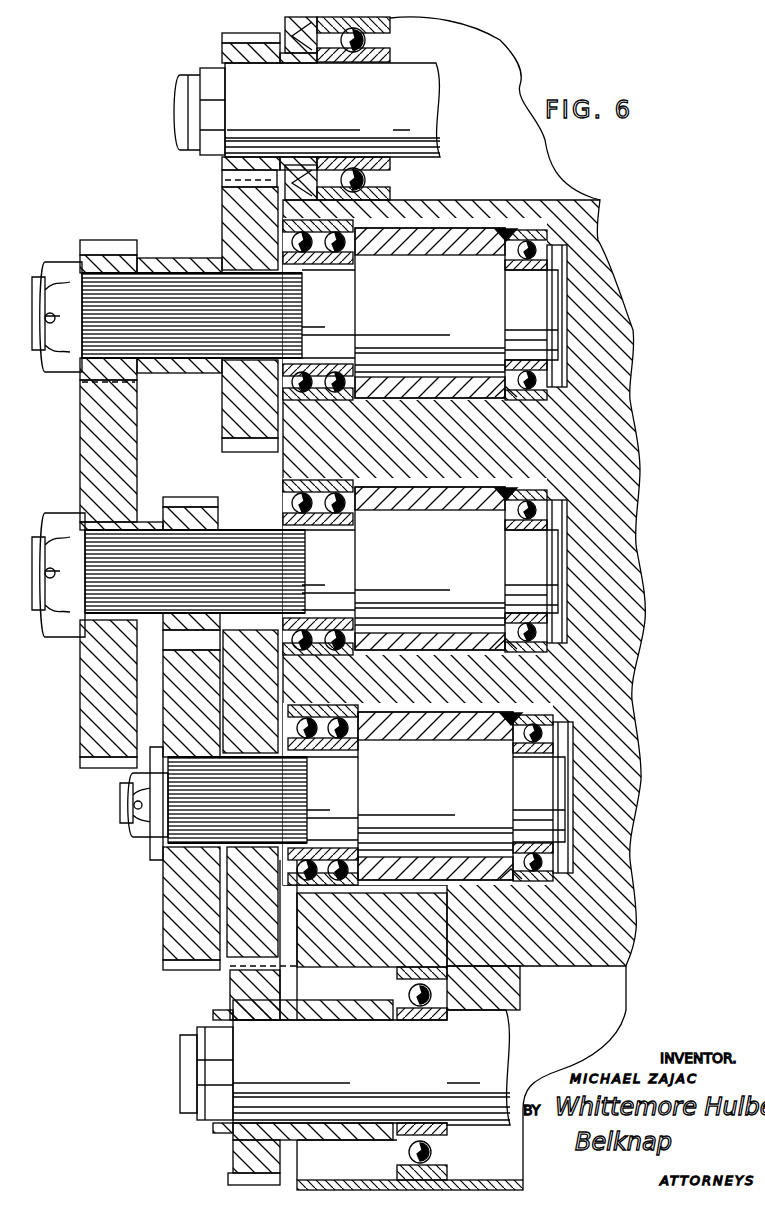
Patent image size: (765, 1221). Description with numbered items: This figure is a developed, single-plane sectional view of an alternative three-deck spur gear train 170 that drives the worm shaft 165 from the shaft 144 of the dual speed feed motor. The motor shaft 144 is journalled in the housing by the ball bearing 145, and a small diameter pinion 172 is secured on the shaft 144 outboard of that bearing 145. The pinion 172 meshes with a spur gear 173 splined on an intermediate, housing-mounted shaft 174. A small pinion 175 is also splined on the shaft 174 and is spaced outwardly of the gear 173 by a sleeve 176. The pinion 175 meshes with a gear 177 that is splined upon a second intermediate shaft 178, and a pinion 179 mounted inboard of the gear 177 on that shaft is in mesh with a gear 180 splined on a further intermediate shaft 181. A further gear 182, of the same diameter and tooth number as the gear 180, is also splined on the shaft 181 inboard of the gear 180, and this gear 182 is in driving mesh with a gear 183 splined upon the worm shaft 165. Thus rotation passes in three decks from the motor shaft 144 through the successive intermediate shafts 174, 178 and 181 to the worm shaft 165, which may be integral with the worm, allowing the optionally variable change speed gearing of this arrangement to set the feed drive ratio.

The motor shaft 144 is at (423, 90).
The ball bearing 145 is at (380, 41).
The worm shaft 165 is at (493, 1036).
The spur gear train 170 is at (63, 454).
The small diameter pinion 172 is at (232, 38).
The spur gear 173 is at (240, 205).
The intermediate housing-mounted shaft 174 is at (425, 310).
The small pinion 175 is at (103, 247).
The sleeve 176 is at (173, 262).
The gear 177 is at (93, 717).
The intermediate shaft 178 is at (425, 567).
The pinion 179 is at (197, 503).
The gear 180 is at (183, 898).
The further intermediate shaft 181 is at (346, 795).
The further gear 182 is at (267, 920).
The gear 183 is at (240, 985).